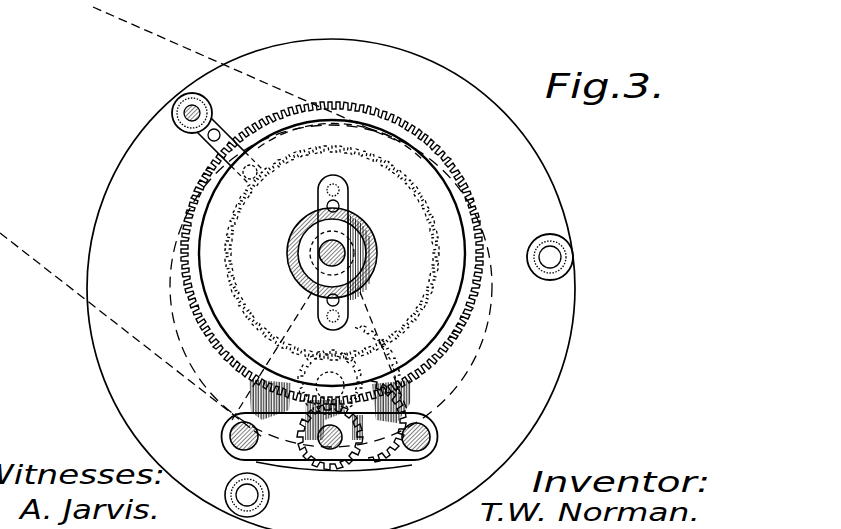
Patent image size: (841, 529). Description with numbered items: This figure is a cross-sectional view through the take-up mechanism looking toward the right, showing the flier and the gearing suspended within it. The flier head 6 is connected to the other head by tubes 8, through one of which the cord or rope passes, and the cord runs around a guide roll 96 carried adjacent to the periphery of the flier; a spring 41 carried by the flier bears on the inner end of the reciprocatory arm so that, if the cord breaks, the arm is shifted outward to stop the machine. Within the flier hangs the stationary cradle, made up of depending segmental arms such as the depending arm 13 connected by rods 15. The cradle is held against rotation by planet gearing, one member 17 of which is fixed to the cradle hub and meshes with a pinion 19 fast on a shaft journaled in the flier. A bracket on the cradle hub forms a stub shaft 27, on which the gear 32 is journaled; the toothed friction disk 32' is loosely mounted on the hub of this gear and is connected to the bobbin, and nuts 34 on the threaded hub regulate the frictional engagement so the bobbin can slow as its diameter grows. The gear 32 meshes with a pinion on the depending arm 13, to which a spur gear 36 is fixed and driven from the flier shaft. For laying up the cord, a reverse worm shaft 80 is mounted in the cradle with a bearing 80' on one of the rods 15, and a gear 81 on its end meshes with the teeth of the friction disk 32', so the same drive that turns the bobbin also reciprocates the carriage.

The flier head 6 is at (331, 284).
The tube 8 is at (566, 255).
The guide roll 96 is at (201, 99).
The spring 41 is at (262, 158).
The friction disk 32' is at (344, 274).
The gear 32 is at (332, 253).
The planet gearing member 17 is at (372, 300).
The pinion 19 is at (378, 312).
The stub shaft 27 is at (346, 252).
The nuts 34 is at (350, 226).
The spur gear 36 is at (290, 368).
The rods 15 is at (440, 434).
The depending arm 13 is at (387, 453).
The reverse worm shaft 80 is at (330, 454).
The bearing 80' is at (325, 416).
The gear 81 is at (350, 446).